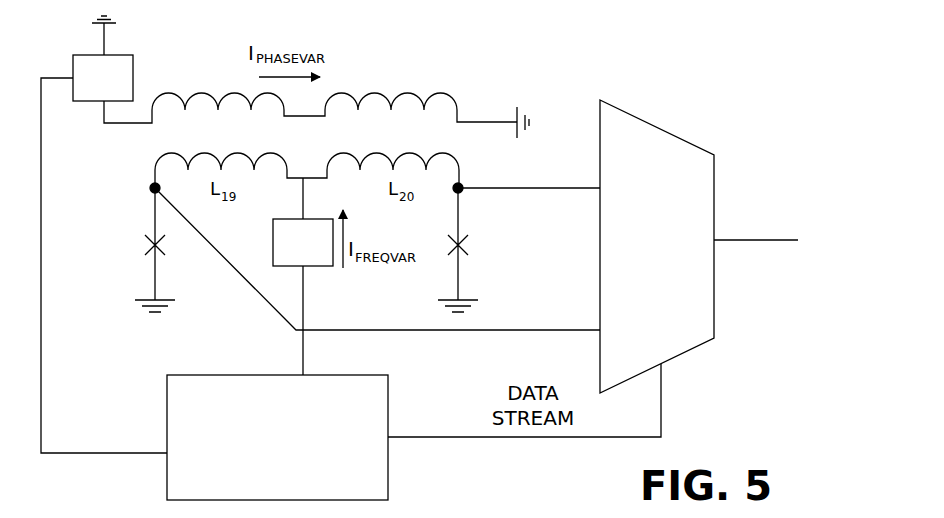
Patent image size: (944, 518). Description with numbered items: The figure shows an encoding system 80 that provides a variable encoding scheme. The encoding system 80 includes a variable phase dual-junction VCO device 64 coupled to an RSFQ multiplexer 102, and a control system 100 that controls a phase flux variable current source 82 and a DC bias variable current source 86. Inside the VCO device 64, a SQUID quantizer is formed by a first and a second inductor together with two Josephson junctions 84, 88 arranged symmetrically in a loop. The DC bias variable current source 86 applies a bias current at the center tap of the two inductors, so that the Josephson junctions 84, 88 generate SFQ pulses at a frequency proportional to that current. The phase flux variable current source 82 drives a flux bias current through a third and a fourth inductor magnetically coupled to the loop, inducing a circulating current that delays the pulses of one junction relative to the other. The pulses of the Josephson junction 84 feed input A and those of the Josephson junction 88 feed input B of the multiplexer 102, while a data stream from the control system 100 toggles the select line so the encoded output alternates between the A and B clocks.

The phase flux variable current source 82 is at (133, 62).
The variable phase dual-junction VCO device 64 is at (500, 54).
The encoding system 80 is at (671, 46).
The Josephson junction 84 is at (126, 253).
The DC bias variable current source 86 is at (295, 219).
The Josephson junction 88 is at (493, 252).
The control system 100 is at (355, 375).
The RSFQ multiplexer 102 is at (656, 126).